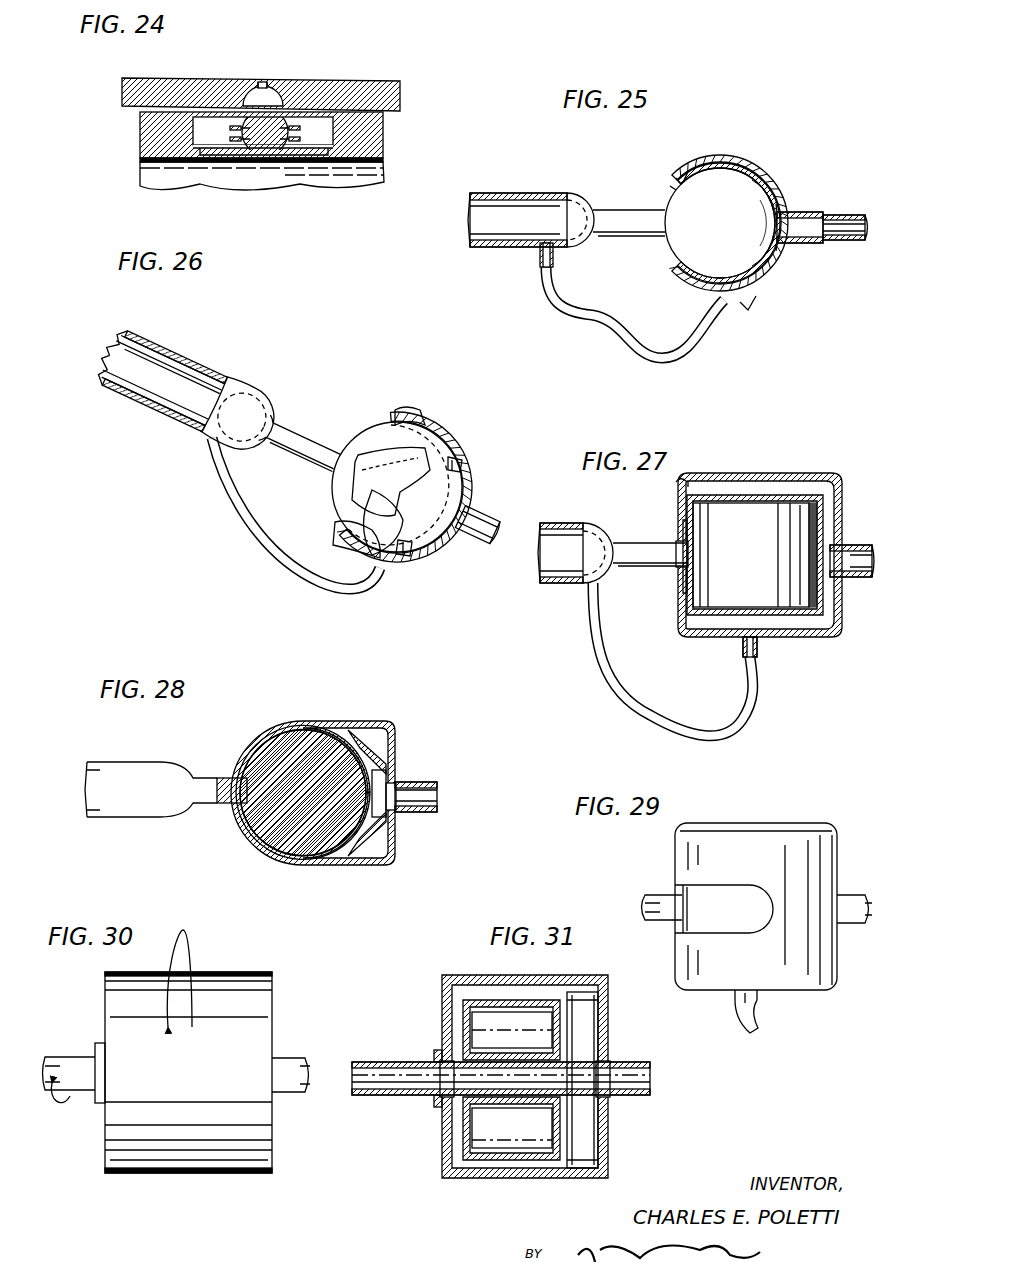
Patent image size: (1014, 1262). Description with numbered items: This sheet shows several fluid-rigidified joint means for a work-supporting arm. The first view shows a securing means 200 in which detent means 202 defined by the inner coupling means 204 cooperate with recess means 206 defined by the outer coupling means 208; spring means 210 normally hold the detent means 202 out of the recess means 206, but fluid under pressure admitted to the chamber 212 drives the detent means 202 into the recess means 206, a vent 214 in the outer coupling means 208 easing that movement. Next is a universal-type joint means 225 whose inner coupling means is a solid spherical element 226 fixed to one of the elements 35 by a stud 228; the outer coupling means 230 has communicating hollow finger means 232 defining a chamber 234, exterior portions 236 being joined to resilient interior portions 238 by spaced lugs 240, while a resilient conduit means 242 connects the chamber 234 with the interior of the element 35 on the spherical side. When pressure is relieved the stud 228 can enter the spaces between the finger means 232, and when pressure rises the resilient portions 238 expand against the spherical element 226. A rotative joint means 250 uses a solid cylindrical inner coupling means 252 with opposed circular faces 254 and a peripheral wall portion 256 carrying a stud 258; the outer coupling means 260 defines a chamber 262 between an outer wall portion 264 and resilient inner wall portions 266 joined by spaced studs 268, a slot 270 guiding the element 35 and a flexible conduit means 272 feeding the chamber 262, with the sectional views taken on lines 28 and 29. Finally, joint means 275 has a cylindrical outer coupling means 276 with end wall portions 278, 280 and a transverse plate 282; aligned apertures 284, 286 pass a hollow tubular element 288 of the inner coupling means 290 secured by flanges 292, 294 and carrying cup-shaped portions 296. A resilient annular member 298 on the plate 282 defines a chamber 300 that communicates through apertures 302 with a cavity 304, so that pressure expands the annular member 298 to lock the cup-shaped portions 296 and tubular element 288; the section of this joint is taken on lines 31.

In FIG. 24, the securing means 200 is at (108, 180).
In FIG. 24, the detent means 202 is at (255, 143).
In FIG. 24, the inner coupling means 204 is at (345, 172).
In FIG. 24, the recess means 206 is at (262, 92).
In FIG. 24, the outer coupling means 208 is at (372, 79).
In FIG. 24, the spring means 210 is at (318, 120).
In FIG. 24, the chamber 212 is at (290, 172).
In FIG. 24, the vent 214 is at (269, 86).
In FIG. 25, the joint means 225 is at (636, 183).
In FIG. 26, the joint means 225 is at (299, 383).
In FIG. 25, the spherical element 226 is at (686, 240).
In FIG. 26, the spherical element 226 is at (360, 418).
In FIG. 25, the stud 228 is at (612, 208).
In FIG. 26, the stud 228 is at (276, 440).
In FIG. 25, the outer coupling means 230 is at (752, 292).
In FIG. 26, the outer coupling means 230 is at (457, 420).
In FIG. 26, the finger means 232 is at (405, 460).
In FIG. 25, the chamber 234 is at (737, 297).
In FIG. 26, the chamber 234 is at (457, 448).
In FIG. 25, the exterior portions 236 is at (716, 160).
In FIG. 26, the exterior portions 236 is at (342, 543).
In FIG. 25, the resilient interior portions 238 is at (740, 165).
In FIG. 26, the resilient interior portions 238 is at (402, 500).
In FIG. 25, the lugs 240 is at (780, 258).
In FIG. 26, the lugs 240 is at (430, 556).
In FIG. 25, the resilient conduit means 242 is at (610, 338).
In FIG. 26, the resilient conduit means 242 is at (320, 583).
In FIG. 27, the joint means 250 is at (791, 454).
In FIG. 28, the joint means 250 is at (297, 713).
In FIG. 29, the joint means 250 is at (782, 809).
In FIG. 27, the inner coupling means 252 is at (780, 520).
In FIG. 29, the inner coupling means 252 is at (717, 918).
In FIG. 27, the circular faces 254 is at (712, 504).
In FIG. 27, the peripheral wall portion 256 is at (703, 584).
In FIG. 27, the stud 258 is at (653, 541).
In FIG. 27, the outer coupling means 260 is at (694, 639).
In FIG. 29, the outer coupling means 260 is at (810, 821).
In FIG. 27, the chamber 262 is at (720, 619).
In FIG. 27, the outer wall portion 264 is at (743, 476).
In FIG. 28, the outer wall portion 264 is at (360, 720).
In FIG. 29, the outer wall portion 264 is at (712, 840).
In FIG. 27, the resilient inner wall portions 266 is at (740, 504).
In FIG. 28, the resilient inner wall portions 266 is at (352, 758).
In FIG. 27, the studs 268 is at (842, 500).
In FIG. 28, the studs 268 is at (396, 728).
In FIG. 29, the slot 270 is at (723, 883).
In FIG. 27, the flexible conduit means 272 is at (619, 683).
In FIG. 29, the flexible conduit means 272 is at (754, 1003).
In FIG. 30, the joint means 275 is at (140, 1190).
In FIG. 31, the joint means 275 is at (470, 1184).
In FIG. 30, the outer coupling means 276 is at (252, 971).
In FIG. 31, the outer coupling means 276 is at (570, 976).
In FIG. 31, the end wall portion 278 is at (443, 1147).
In FIG. 31, the end wall portion 280 is at (610, 1024).
In FIG. 31, the plate 282 is at (577, 1158).
In FIG. 31, the axial aperture 284 is at (447, 1113).
In FIG. 31, the axial aperture 286 is at (603, 1117).
In FIG. 31, the tubular element 288 is at (513, 1069).
In FIG. 31, the inner coupling means 290 is at (508, 1165).
In FIG. 31, the flange 292 is at (433, 1100).
In FIG. 31, the flange 294 is at (574, 1054).
In FIG. 31, the cup-shaped portions 296 is at (428, 949).
In FIG. 31, the resilient annular member 298 is at (498, 1008).
In FIG. 31, the chamber 300 is at (511, 1128).
In FIG. 31, the apertures 302 is at (595, 1136).
In FIG. 31, the cavity 304 is at (589, 1062).
In FIG. 25, the elements 35 is at (522, 193).
In FIG. 26, the elements 35 is at (157, 343).
In FIG. 27, the elements 35 is at (563, 522).
In FIG. 28, the elements 35 is at (113, 762).
In FIG. 29, the elements 35 is at (657, 893).
In FIG. 30, the elements 35 is at (66, 1057).
In FIG. 31, the elements 35 is at (393, 1061).
In FIG. 26, the section lines 28— 28 is at (517, 540).
In FIG. 27, the section lines 28— 28 is at (886, 555).
In FIG. 28, the section lines 29— 29 is at (207, 892).
In FIG. 30, the section lines 31— 31 is at (20, 1073).